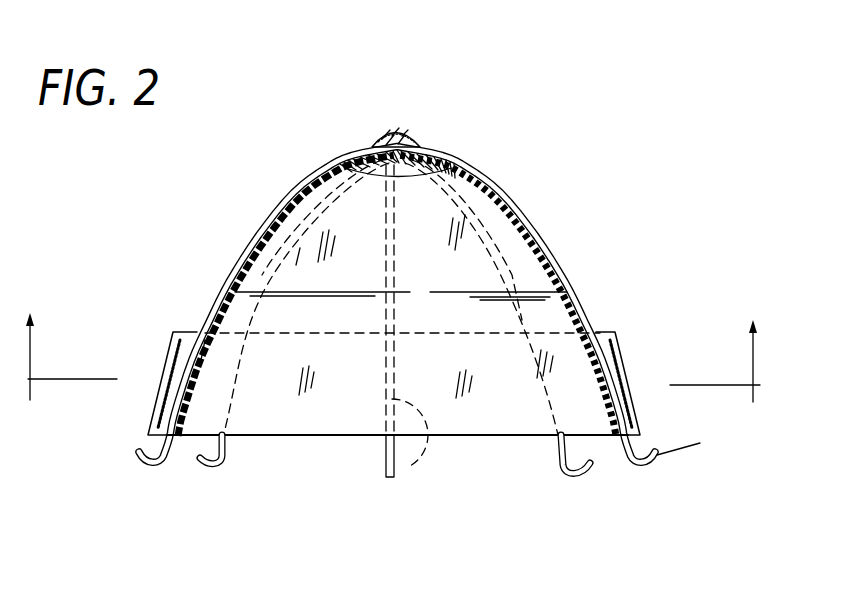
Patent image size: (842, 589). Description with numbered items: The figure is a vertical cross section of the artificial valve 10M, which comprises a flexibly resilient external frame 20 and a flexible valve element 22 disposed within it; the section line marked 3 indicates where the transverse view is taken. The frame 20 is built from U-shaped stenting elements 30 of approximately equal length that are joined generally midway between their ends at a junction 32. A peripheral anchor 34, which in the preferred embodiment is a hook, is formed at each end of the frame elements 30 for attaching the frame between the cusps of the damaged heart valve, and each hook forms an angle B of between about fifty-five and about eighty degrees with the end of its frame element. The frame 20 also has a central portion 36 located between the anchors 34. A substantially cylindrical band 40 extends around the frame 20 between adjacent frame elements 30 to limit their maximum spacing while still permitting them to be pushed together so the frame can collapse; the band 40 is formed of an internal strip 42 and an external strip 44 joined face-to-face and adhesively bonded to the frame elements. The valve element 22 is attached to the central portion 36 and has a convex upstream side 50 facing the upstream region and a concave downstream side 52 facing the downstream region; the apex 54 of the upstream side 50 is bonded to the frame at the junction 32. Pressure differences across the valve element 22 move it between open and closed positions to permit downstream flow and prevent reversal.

The artificial valve 10M is at (574, 168).
The external frame 20 is at (300, 175).
The flexible valve element 22 is at (210, 400).
The U-shaped stenting element 30 is at (584, 292).
The junction 32 is at (420, 130).
The peripheral anchor 34 is at (147, 468).
The central portion 36 is at (378, 118).
The band 40 is at (632, 350).
The internal strip 42 is at (200, 357).
The external strip 44 is at (172, 353).
The upstream side 50 is at (497, 190).
The downstream side 52 is at (293, 203).
The apex 54 is at (372, 135).
The angle B is at (637, 410).
The section line 3- 3 is at (392, 372).